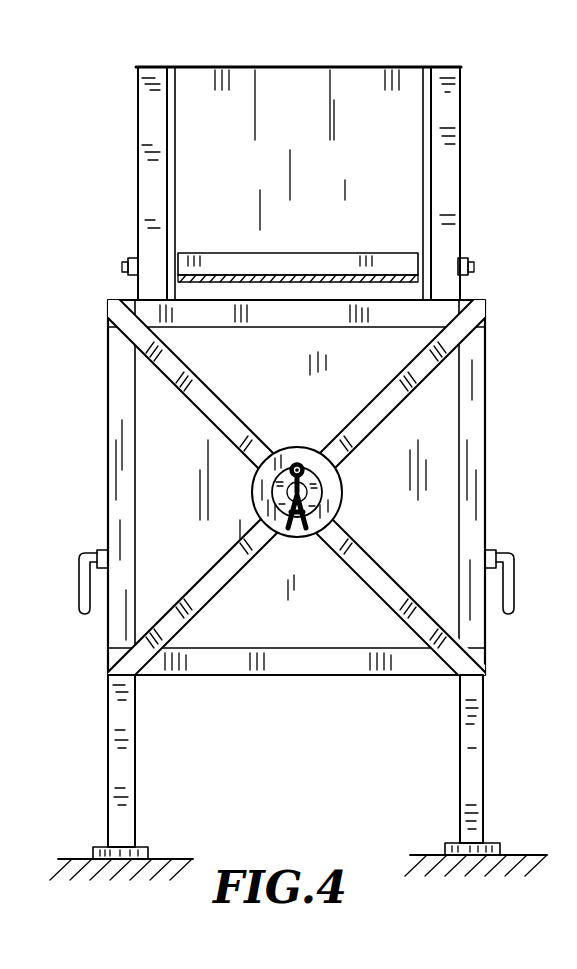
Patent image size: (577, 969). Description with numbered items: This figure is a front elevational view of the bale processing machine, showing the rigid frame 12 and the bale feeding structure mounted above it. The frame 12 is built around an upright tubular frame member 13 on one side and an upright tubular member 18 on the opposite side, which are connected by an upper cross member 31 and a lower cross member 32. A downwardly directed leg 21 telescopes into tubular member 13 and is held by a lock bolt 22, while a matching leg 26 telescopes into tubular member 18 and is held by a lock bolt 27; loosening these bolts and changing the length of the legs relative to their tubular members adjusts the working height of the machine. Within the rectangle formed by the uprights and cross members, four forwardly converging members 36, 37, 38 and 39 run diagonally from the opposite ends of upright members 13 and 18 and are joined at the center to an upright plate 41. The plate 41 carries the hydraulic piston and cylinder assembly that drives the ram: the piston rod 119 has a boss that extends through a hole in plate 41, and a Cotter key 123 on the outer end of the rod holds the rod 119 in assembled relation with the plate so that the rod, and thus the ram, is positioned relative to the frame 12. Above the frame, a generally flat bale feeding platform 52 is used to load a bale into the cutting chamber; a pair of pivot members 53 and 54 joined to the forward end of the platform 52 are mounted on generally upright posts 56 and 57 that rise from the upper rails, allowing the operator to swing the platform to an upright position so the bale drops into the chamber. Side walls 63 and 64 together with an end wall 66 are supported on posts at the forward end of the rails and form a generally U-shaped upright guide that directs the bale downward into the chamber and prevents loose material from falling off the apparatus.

The frame 12 is at (292, 495).
The upright tubular frame member 13 is at (473, 408).
The upright tubular member 18 is at (123, 407).
The leg 21 is at (475, 760).
The lock bolt 22 is at (515, 580).
The leg 26 is at (122, 758).
The lock bolt 27 is at (80, 583).
The cross member 31 is at (292, 318).
The cross member 32 is at (215, 672).
The forwardly converging member 36 is at (216, 410).
The forwardly converging member 37 is at (378, 401).
The forwardly converging member 38 is at (195, 596).
The forwardly converging member 39 is at (392, 600).
The upright plate 41 is at (330, 488).
The bale feeding platform 52 is at (217, 262).
The pivot member 53 is at (474, 266).
The pivot member 54 is at (122, 266).
The post 56 is at (462, 112).
The post 57 is at (150, 112).
The side wall 63 is at (425, 112).
The side wall 64 is at (176, 112).
The end wall 66 is at (316, 90).
The piston rod 119 is at (252, 488).
The locking pin 123 is at (298, 458).